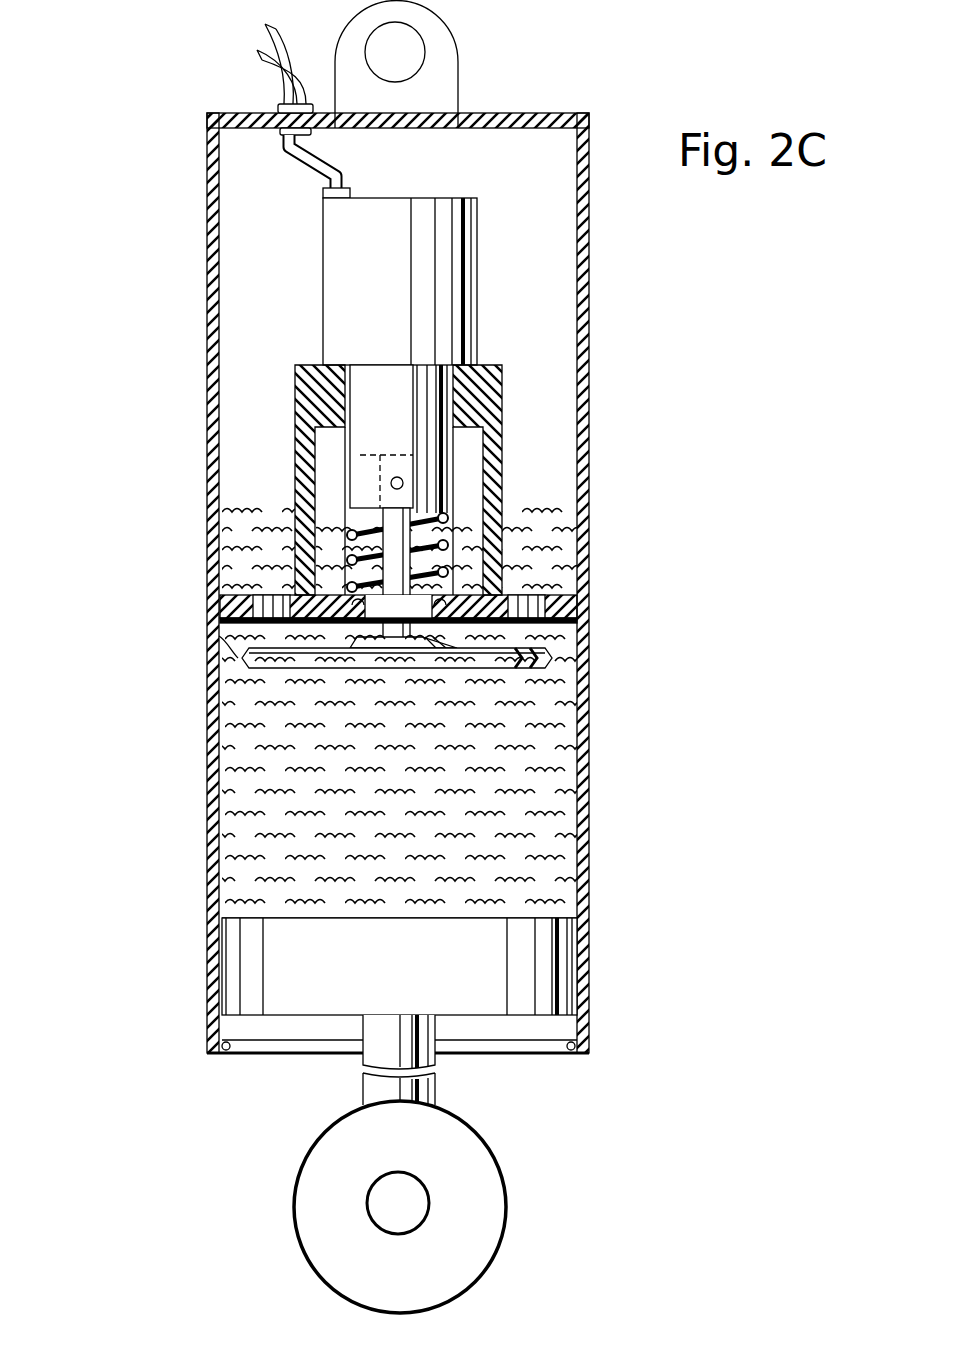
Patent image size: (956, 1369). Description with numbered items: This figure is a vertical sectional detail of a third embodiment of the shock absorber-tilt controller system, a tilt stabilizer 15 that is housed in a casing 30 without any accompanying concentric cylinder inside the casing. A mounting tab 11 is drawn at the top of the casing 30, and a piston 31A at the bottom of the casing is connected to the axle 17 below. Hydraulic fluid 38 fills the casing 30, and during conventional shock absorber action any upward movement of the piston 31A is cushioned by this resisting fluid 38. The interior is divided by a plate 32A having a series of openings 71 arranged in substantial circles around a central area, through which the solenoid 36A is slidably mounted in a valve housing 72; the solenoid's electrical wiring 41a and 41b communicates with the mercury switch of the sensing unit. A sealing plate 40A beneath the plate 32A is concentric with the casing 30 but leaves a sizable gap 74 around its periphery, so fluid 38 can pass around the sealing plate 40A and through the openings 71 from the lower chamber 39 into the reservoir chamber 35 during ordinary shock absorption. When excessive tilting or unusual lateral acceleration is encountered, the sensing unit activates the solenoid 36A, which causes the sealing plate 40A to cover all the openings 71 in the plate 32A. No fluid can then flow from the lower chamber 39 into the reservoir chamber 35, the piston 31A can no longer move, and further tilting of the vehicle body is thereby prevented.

The upper mounting tab 11 is at (440, 75).
The tilt stabilizer 15 is at (136, 218).
The axle 17 is at (504, 1183).
The casing 30 is at (590, 300).
The piston 31A is at (470, 965).
The plate 32A is at (555, 595).
The reservoir chamber 35 is at (207, 570).
The solenoid 36A is at (392, 402).
The fluid 38 is at (480, 780).
The lower chamber 39 is at (207, 820).
The sealing plate 40A is at (510, 668).
The electrical wiring 41a is at (270, 14).
The electrical wiring 41b is at (265, 72).
The openings 71 is at (545, 622).
The valve housing 72 is at (500, 443).
The gap 74 is at (215, 634).